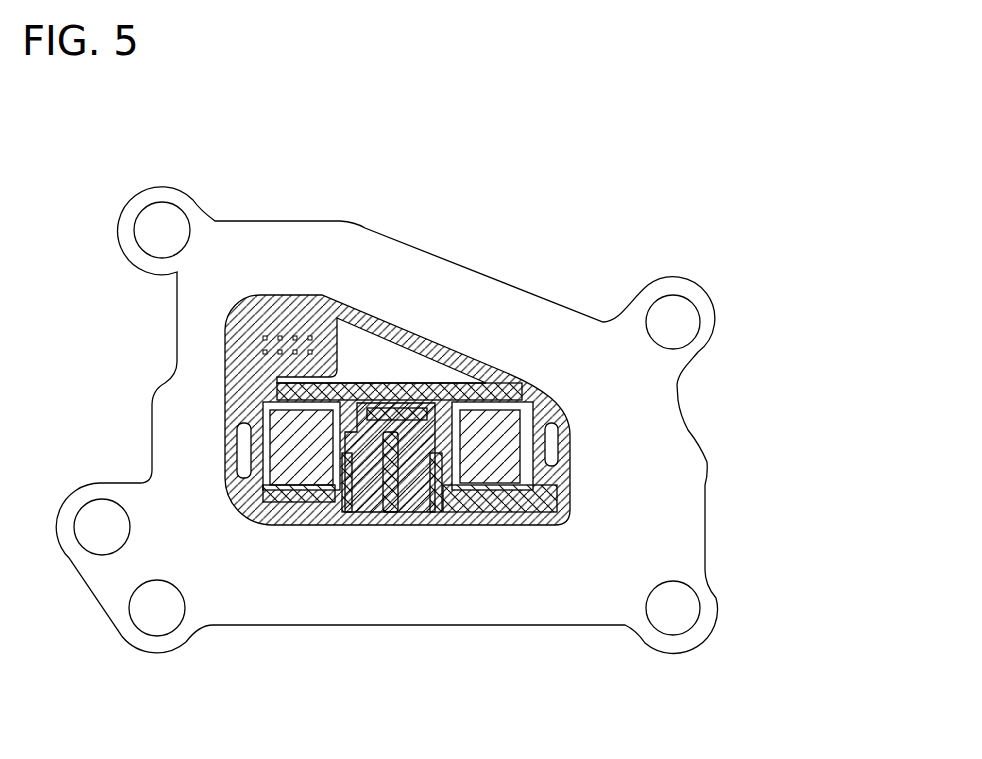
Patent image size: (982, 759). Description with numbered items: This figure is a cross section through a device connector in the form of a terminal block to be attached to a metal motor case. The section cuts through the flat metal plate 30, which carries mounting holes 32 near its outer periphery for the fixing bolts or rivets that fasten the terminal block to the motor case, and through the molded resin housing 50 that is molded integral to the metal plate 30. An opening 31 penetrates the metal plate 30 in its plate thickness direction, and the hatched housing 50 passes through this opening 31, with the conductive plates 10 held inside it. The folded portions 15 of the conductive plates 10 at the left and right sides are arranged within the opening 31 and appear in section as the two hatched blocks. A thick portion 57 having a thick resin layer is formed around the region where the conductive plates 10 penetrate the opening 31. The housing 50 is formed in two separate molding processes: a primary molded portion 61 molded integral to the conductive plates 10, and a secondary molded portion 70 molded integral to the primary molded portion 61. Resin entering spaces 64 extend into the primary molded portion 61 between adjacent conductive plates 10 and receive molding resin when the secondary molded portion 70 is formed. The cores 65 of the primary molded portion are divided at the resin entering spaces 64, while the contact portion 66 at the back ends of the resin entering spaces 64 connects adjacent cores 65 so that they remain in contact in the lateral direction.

The conductive plate 10 is at (408, 400).
The folded portion 15 is at (297, 423).
The metal plate 30 is at (695, 528).
The opening 31 is at (527, 512).
The mounting hole 32 is at (690, 312).
The housing 50 is at (298, 284).
The thick portion 57 is at (293, 532).
The primary molded portion 61 is at (367, 498).
The resin entering space 64 is at (348, 452).
The core 65 is at (262, 490).
The contact portion 66 is at (447, 427).
The secondary molded portion 70 is at (273, 525).